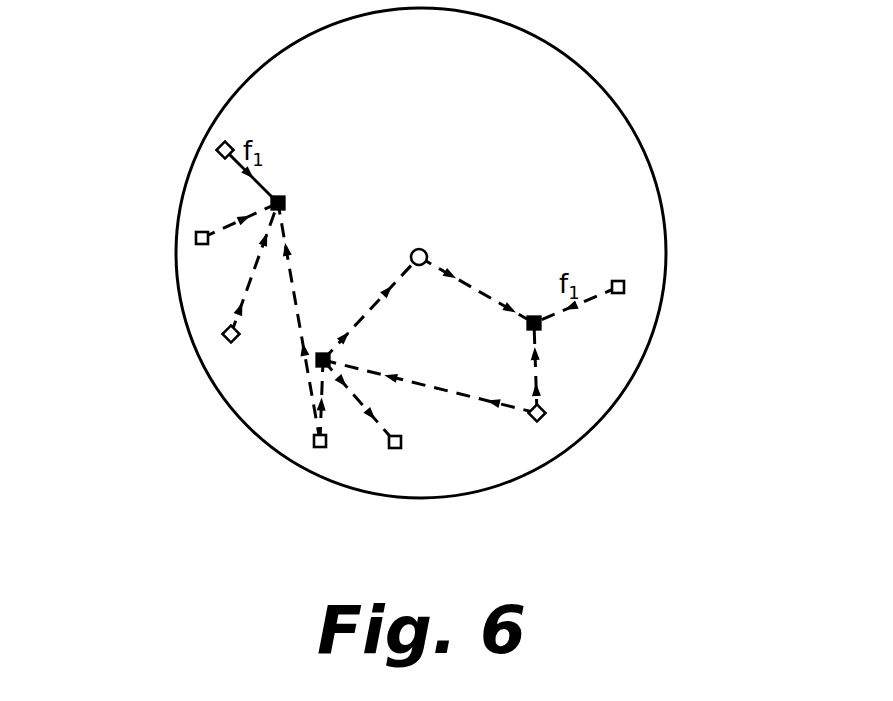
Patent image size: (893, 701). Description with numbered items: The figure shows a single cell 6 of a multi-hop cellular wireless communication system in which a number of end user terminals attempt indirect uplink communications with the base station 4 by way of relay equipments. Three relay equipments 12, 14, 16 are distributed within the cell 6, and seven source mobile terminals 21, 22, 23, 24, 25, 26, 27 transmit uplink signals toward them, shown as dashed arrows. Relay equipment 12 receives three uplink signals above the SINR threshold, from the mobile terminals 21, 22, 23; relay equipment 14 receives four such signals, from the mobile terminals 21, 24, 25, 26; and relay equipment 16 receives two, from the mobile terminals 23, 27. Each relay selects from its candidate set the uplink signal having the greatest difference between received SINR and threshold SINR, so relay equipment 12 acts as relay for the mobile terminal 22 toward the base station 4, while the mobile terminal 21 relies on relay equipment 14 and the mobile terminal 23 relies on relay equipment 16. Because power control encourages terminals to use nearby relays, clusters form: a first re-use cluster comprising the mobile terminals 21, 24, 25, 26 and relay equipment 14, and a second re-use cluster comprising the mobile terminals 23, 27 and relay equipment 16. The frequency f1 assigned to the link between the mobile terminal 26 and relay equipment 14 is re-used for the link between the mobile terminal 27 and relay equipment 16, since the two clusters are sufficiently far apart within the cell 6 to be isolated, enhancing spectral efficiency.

The cell 6 is at (645, 152).
The relay equipment 14 is at (279, 190).
The relay equipment 12 is at (332, 357).
The relay equipment 16 is at (541, 328).
The base station 4 is at (425, 252).
The source mobile terminal 21 is at (313, 441).
The source mobile terminal 22 is at (397, 449).
The source mobile terminal 23 is at (543, 420).
The source mobile terminal 24 is at (226, 341).
The source mobile terminal 25 is at (196, 238).
The source mobile terminal 26 is at (218, 149).
The source mobile terminal 27 is at (625, 286).